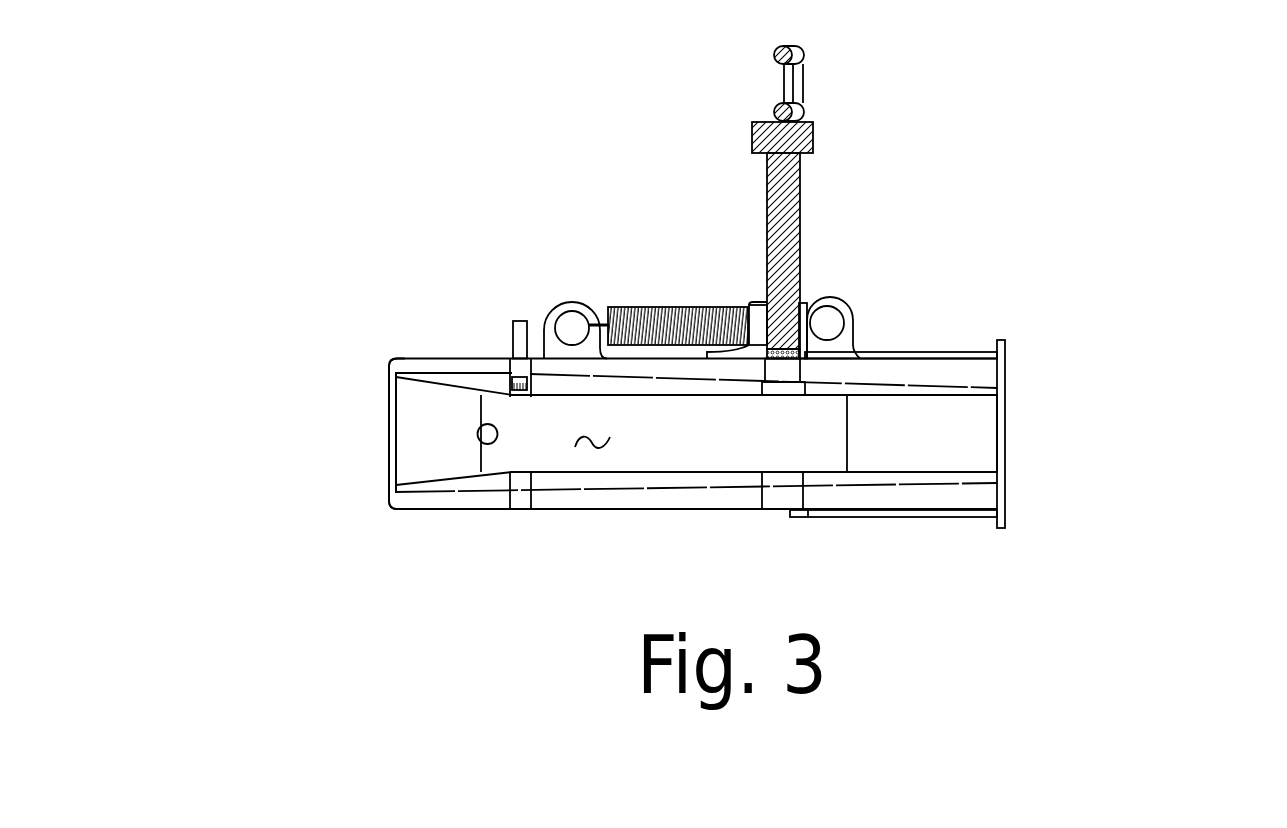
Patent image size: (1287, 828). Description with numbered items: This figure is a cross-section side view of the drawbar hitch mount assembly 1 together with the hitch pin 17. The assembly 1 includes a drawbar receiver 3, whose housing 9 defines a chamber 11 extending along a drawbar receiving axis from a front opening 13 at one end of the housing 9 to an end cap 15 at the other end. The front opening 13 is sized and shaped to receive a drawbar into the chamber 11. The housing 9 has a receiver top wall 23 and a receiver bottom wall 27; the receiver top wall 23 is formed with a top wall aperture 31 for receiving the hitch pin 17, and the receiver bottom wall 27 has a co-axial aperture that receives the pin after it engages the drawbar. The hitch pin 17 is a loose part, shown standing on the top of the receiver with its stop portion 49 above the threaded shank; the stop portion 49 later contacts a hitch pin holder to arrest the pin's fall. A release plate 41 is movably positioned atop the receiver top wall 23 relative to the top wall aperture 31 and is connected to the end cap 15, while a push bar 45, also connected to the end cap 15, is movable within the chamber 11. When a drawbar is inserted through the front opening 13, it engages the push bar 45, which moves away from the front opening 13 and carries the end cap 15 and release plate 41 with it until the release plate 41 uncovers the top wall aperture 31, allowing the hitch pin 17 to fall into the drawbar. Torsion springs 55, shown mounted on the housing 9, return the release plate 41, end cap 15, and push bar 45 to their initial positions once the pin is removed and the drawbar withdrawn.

The drawbar hitch mount assembly 1 is at (475, 200).
The drawbar receiver 3 is at (558, 513).
The housing 9 is at (473, 362).
The chamber 11 is at (592, 448).
The front opening 13 is at (395, 432).
The end cap 15 is at (1007, 466).
The hitch pin 17 is at (800, 230).
The receiver top wall 23 is at (983, 373).
The receiver bottom wall 27 is at (828, 498).
The top wall aperture 31 is at (792, 374).
The release plate 41 is at (953, 351).
The push bar 45 is at (925, 458).
The stop portion 49 is at (813, 155).
The springs 55 is at (723, 308).